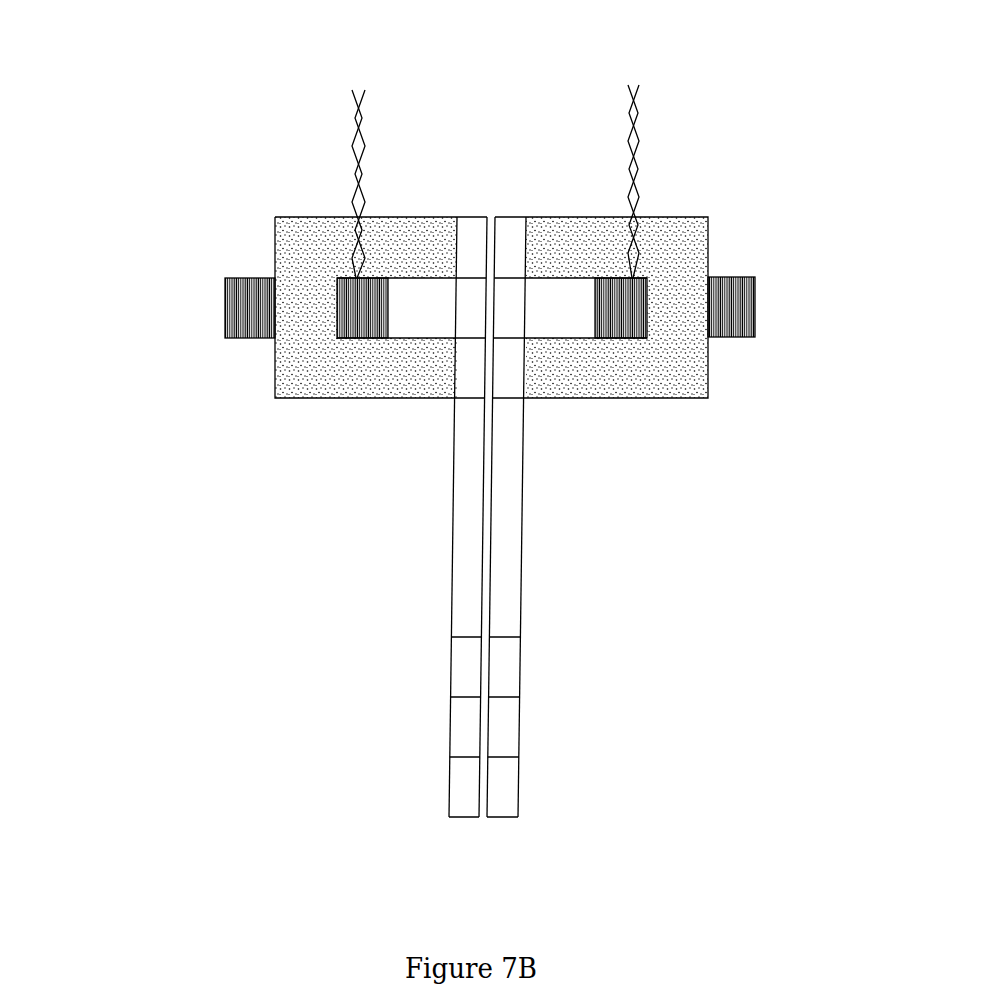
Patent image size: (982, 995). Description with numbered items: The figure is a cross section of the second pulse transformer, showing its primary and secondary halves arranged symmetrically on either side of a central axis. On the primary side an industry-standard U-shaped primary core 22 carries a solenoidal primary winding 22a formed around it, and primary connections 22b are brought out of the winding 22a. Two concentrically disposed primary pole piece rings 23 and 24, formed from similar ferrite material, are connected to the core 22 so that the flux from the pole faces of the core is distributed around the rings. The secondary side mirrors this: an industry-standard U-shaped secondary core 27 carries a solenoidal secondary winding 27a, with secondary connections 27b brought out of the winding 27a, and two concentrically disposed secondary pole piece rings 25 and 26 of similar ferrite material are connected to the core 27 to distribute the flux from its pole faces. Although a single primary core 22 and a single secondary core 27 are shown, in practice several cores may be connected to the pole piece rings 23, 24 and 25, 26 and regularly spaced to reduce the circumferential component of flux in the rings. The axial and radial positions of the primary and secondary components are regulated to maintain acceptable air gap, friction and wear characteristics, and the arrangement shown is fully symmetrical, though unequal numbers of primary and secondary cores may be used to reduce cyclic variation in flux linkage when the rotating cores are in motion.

The primary core 22 is at (298, 208).
The primary winding 22a is at (322, 300).
The primary connections 22b is at (380, 143).
The primary pole piece ring 23 is at (446, 376).
The primary pole piece ring 24 is at (452, 270).
The secondary pole piece ring 25 is at (531, 268).
The secondary pole piece ring 26 is at (530, 782).
The secondary core 27 is at (680, 208).
The secondary winding 27a is at (665, 300).
The secondary connections 27b is at (612, 171).